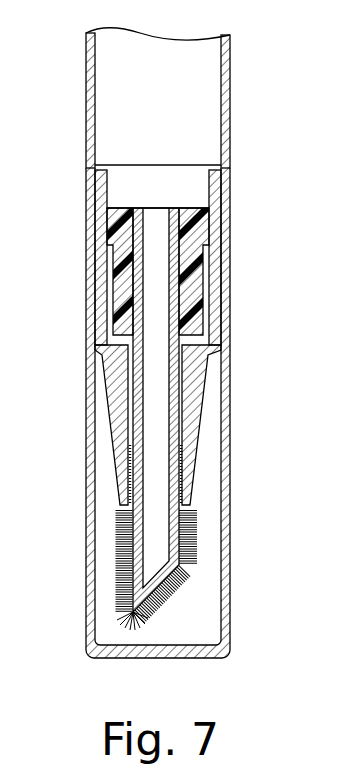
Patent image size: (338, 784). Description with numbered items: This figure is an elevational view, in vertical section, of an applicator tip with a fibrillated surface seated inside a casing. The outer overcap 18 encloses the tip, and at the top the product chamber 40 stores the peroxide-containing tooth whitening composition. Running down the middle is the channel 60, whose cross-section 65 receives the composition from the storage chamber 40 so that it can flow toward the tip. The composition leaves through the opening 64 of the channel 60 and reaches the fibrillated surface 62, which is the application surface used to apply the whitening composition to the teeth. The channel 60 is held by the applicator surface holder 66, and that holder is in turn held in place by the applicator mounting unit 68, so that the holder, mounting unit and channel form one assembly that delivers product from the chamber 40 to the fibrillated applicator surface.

The overcap 18 is at (231, 472).
The product chamber 40 is at (230, 85).
The channel 60 is at (162, 570).
The fibrillated surface 62 is at (123, 576).
The opening 64 is at (172, 600).
The cross-section 65 is at (155, 390).
The applicator surface holder 66 is at (202, 413).
The applicator mounting unit 68 is at (208, 229).